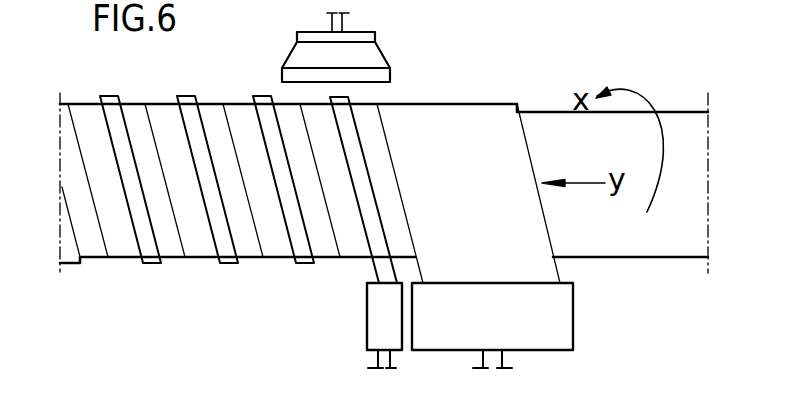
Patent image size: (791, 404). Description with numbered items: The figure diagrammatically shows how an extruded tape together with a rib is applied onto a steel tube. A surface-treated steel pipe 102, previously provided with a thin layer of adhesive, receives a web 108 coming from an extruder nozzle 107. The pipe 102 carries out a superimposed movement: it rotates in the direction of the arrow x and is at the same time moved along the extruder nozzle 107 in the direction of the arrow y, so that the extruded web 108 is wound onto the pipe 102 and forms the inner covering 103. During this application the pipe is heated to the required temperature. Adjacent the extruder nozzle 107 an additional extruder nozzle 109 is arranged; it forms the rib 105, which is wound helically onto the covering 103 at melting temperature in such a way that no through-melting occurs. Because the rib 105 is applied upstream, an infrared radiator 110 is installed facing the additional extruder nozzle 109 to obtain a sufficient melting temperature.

The steel pipe 102 is at (543, 132).
The inner covering 103 is at (174, 130).
The rib 105 is at (365, 240).
The extruder nozzle 107 is at (562, 322).
The web 108 is at (448, 135).
The additional extruder nozzle 109 is at (380, 314).
The infrared radiator 110 is at (300, 50).